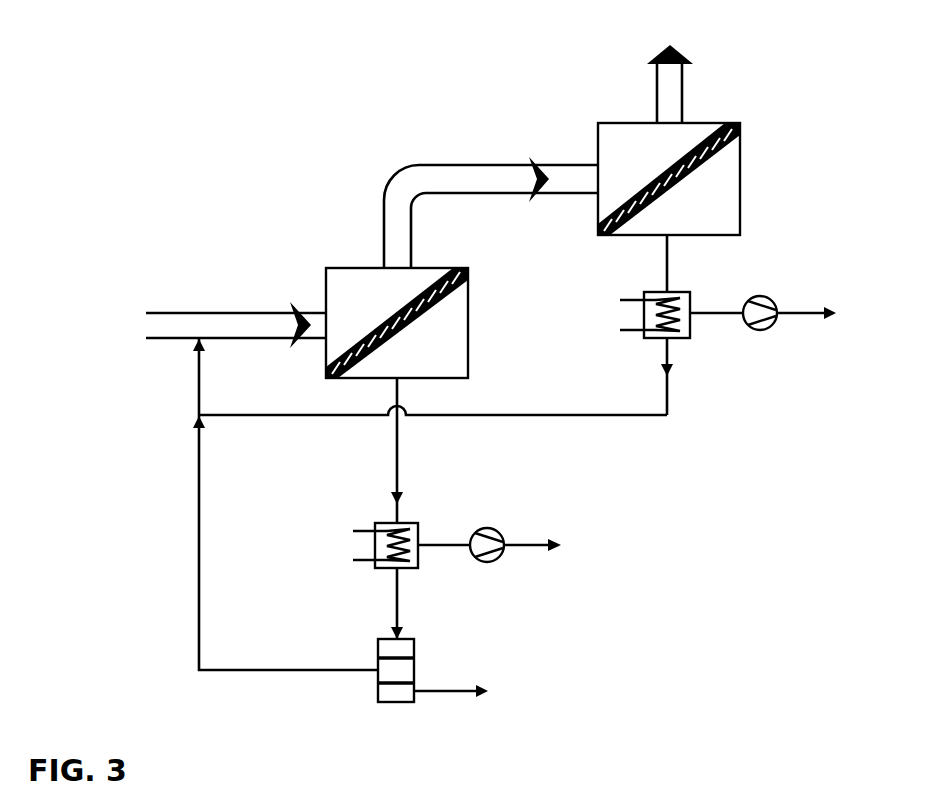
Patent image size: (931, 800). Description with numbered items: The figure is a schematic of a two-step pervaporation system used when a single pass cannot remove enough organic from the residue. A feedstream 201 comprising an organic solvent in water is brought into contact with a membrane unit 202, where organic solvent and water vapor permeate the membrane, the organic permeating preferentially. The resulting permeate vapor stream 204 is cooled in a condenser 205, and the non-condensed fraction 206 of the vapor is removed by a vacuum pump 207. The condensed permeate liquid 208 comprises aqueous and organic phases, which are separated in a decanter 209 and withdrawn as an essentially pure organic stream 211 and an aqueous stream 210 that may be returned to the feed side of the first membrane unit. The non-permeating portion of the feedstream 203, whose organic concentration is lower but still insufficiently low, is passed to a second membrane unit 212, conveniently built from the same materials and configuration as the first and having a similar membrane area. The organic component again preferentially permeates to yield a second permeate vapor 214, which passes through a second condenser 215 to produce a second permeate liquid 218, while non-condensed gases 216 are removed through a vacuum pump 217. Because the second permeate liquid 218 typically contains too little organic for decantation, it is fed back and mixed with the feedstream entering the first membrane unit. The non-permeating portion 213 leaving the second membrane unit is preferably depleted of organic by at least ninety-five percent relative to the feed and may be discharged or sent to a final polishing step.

The feedstream 201 is at (236, 318).
The membrane unit 202 is at (397, 323).
The non-permeating portion of the feedstream 203 is at (491, 204).
The permeate vapor stream 204 is at (375, 450).
The condenser 205 is at (373, 545).
The non-condensed fraction 206 is at (512, 545).
The vacuum pump 207 is at (488, 531).
The condensed permeate liquid 208 is at (373, 603).
The decanter 209 is at (397, 684).
The aqueous stream 210 is at (285, 504).
The organic stream 211 is at (474, 690).
The second membrane unit 212 is at (669, 179).
The non-permeating portion from the second membrane unit 213 is at (670, 71).
The second permeate vapor 214 is at (643, 263).
The second condenser 215 is at (644, 315).
The non-condensed gases 216 is at (786, 313).
The vacuum pump 217 is at (762, 300).
The second permeate liquid 218 is at (433, 383).